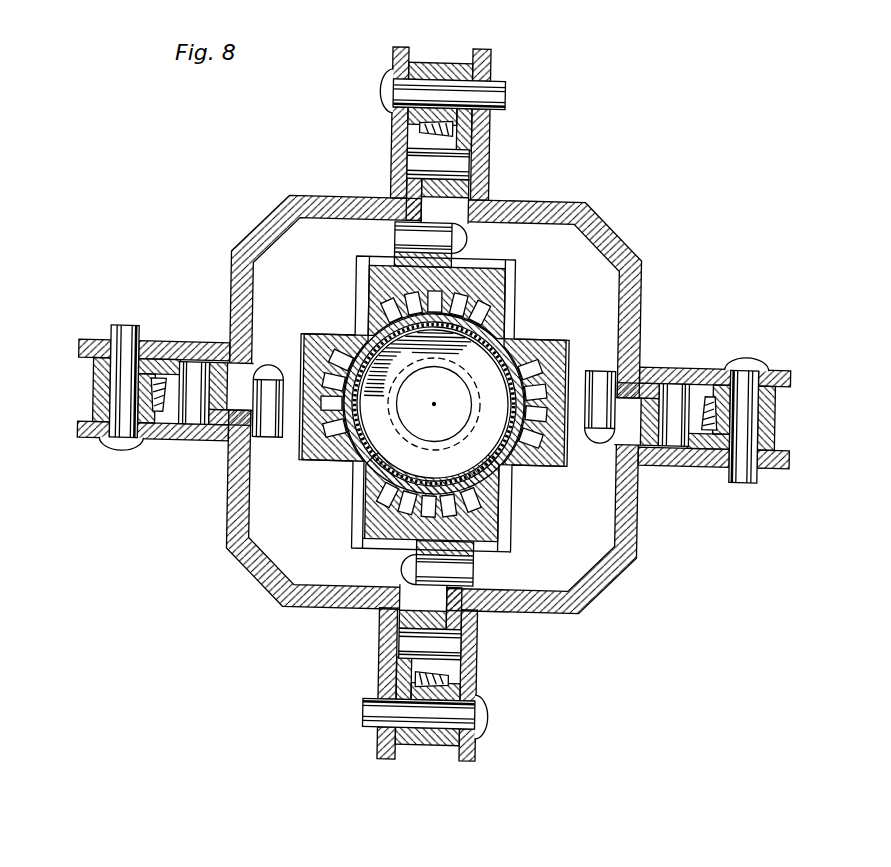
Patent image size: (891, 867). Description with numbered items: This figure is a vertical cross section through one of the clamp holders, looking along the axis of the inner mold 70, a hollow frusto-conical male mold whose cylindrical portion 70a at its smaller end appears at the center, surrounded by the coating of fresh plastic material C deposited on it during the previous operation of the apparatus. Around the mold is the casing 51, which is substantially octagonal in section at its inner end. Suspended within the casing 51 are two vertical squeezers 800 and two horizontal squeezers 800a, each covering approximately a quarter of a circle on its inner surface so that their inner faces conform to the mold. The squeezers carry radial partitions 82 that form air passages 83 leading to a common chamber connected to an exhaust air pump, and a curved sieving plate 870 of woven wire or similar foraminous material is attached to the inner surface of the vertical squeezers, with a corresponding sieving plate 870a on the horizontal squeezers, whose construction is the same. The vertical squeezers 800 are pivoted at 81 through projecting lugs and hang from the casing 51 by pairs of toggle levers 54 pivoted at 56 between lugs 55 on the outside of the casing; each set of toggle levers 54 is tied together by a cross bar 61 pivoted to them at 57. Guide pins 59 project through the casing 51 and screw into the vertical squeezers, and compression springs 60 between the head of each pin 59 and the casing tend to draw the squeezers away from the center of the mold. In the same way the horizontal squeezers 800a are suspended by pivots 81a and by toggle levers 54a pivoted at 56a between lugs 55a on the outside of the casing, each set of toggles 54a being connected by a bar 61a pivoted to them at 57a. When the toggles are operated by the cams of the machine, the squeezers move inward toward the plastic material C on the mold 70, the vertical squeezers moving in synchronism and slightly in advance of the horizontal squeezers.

The casing 51 is at (608, 242).
The toggle levers 54 is at (420, 130).
The toggle levers 54a is at (172, 377).
The lugs 55 is at (393, 58).
The lugs 55a is at (812, 378).
The pivot 56 is at (503, 93).
The pivot 56a is at (750, 477).
The pivot 57 is at (457, 163).
The pivot 57a is at (192, 422).
The guide pins 59 is at (393, 152).
The compression springs 60 is at (430, 135).
The cross bar 61 is at (470, 190).
The bar 61a is at (655, 473).
The inner mold 70 is at (506, 343).
The cylindrical portion 70a is at (470, 390).
The pivot 81 is at (470, 240).
The pivot 81a is at (605, 360).
The radial partitions 82 is at (513, 265).
The air passages 83 is at (367, 297).
The vertical squeezers 800 is at (492, 293).
The horizontal squeezers 800a is at (600, 346).
The curved sieving plate 870 is at (490, 311).
The ring segment 870a is at (582, 468).
The coating of fresh plastic material C is at (426, 404).